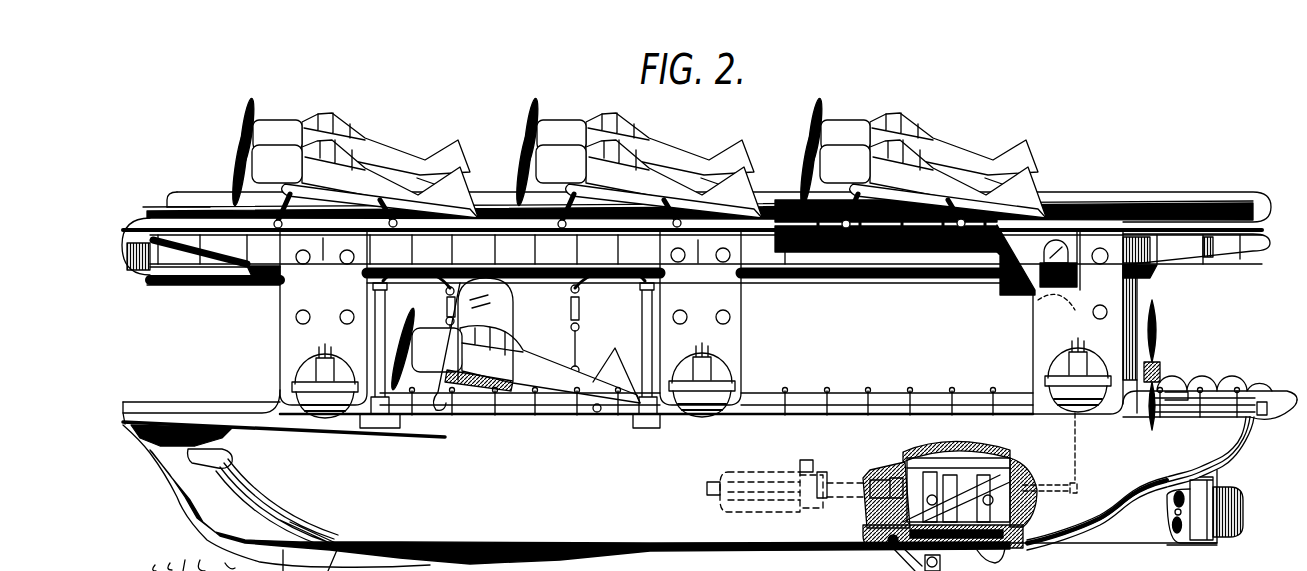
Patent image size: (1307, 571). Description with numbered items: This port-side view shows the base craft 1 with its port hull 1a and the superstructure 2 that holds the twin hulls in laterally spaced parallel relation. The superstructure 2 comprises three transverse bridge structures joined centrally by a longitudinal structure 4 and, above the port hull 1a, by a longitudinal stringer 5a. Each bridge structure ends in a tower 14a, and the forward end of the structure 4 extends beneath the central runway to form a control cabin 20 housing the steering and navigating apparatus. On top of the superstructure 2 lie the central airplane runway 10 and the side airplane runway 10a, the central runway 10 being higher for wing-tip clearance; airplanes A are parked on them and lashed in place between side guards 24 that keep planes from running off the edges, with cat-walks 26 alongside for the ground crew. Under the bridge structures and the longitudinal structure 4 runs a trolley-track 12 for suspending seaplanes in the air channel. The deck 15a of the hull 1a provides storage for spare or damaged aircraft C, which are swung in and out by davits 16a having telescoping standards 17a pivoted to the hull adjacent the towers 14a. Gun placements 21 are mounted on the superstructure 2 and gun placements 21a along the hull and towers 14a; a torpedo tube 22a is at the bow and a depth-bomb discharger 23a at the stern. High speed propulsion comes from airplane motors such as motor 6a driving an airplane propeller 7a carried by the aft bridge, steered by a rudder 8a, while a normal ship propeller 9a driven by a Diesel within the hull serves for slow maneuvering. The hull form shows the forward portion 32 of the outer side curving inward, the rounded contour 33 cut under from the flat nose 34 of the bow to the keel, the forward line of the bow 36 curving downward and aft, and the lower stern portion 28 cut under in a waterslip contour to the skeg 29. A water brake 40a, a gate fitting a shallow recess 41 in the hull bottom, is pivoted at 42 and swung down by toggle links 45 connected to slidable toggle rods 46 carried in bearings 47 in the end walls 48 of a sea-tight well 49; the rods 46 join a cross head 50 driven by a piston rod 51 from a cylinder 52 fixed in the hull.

The base craft 1 is at (707, 480).
The port side hull 1a is at (200, 423).
The superstructure 2 is at (203, 182).
The longitudinal structure 4 is at (225, 270).
The longitudinal stringer 5a is at (548, 265).
The airplane motor 6a is at (1137, 312).
The airplane propeller 7a is at (1160, 326).
The rudder 8a is at (1235, 517).
The ship propeller 9a is at (1182, 528).
The central airplane runway 10 is at (484, 198).
The side airplane runway 10a is at (153, 240).
The trolley-track 12 is at (180, 285).
The tower 14a is at (293, 349).
The deck 15a is at (512, 416).
The davit 16a is at (437, 284).
The telescoping standard 17a is at (377, 350).
The control cabin 20 is at (143, 262).
The gun placement 21 is at (263, 277).
The gun placement 21a is at (312, 395).
The torpedo tube 22a is at (218, 461).
The depth-bomb discharger 23a is at (1262, 383).
The side guard 24 is at (767, 210).
The cat-walk 26 is at (927, 255).
The lower stern portion 28 is at (1150, 512).
The shaft-log or skeg 29 is at (1142, 533).
The forward portion of the outer side 32 is at (284, 447).
The rounded contour 33 is at (246, 515).
The nose of the bow 34 is at (125, 412).
The forward line of the bow 36 is at (177, 478).
The water brake 40a is at (1003, 563).
The recess 41 is at (1023, 518).
The pivot 42 is at (893, 549).
The toggle link 45 is at (957, 516).
The toggle rod 46 is at (1047, 481).
The bearing 47 is at (903, 468).
The end wall 48 is at (897, 448).
The sea-tight well 49 is at (990, 466).
The cross head 50 is at (870, 502).
The piston rod 51 is at (840, 482).
The cylinder 52 is at (755, 472).
The airplane A is at (387, 178).
The spare or damaged aircraft C is at (495, 356).